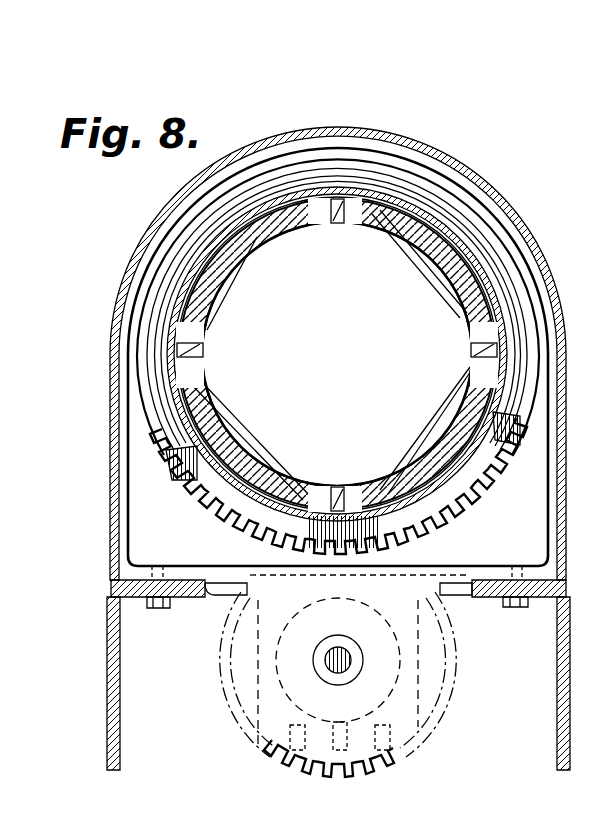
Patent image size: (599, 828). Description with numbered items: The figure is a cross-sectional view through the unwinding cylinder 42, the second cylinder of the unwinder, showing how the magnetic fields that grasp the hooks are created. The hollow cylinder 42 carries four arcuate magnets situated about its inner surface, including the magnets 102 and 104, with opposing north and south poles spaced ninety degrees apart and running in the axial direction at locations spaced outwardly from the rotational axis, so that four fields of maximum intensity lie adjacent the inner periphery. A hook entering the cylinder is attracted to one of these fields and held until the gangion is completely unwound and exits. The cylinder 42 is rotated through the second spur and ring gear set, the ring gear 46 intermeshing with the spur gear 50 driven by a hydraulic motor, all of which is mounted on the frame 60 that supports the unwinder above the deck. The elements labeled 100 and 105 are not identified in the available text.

The second cylinder 42 is at (432, 228).
The ring gear 46 is at (482, 502).
The spur gear 50 is at (407, 757).
The frame 60 is at (565, 680).
The permanent magnet ring 100 is at (263, 233).
The magnet 102 is at (463, 280).
The magnet 104 is at (455, 438).
The spacer 105 is at (245, 459).